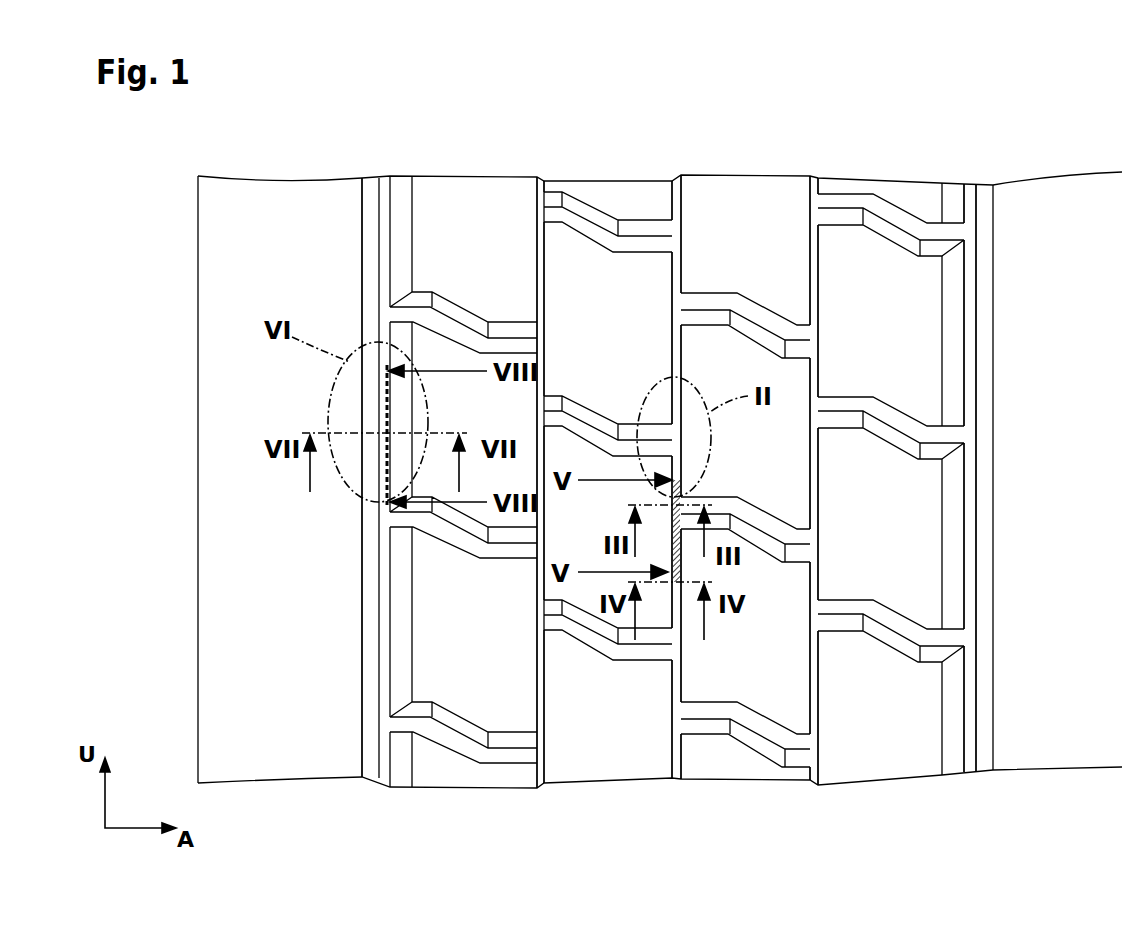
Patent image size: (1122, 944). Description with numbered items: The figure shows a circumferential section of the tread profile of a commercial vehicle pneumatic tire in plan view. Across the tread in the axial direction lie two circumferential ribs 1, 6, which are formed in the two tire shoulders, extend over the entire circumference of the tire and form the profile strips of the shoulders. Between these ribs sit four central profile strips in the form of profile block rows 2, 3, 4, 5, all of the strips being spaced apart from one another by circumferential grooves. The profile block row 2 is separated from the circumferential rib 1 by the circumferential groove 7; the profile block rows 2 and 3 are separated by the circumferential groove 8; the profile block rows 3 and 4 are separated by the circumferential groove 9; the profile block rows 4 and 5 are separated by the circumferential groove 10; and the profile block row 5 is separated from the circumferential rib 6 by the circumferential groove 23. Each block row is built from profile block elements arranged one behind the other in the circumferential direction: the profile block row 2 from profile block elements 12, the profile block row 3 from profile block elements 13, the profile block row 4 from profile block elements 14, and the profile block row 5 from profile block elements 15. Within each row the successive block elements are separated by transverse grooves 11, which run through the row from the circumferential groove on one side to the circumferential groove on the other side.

The circumferential rib 1 is at (283, 213).
The profile block row 2 is at (436, 205).
The profile block row 3 is at (585, 200).
The profile block row 4 is at (712, 218).
The profile block row 5 is at (907, 197).
The circumferential rib 6 is at (1060, 205).
The circumferential groove 7 is at (387, 773).
The circumferential groove 8 is at (542, 787).
The circumferential groove 9 is at (678, 765).
The circumferential groove 10 is at (813, 782).
The transverse groove 11 is at (467, 745).
The profile block element 12 is at (490, 205).
The profile block element 13 is at (632, 205).
The profile block element 14 is at (777, 212).
The profile block element 15 is at (858, 205).
The circumferential groove 23 is at (970, 763).